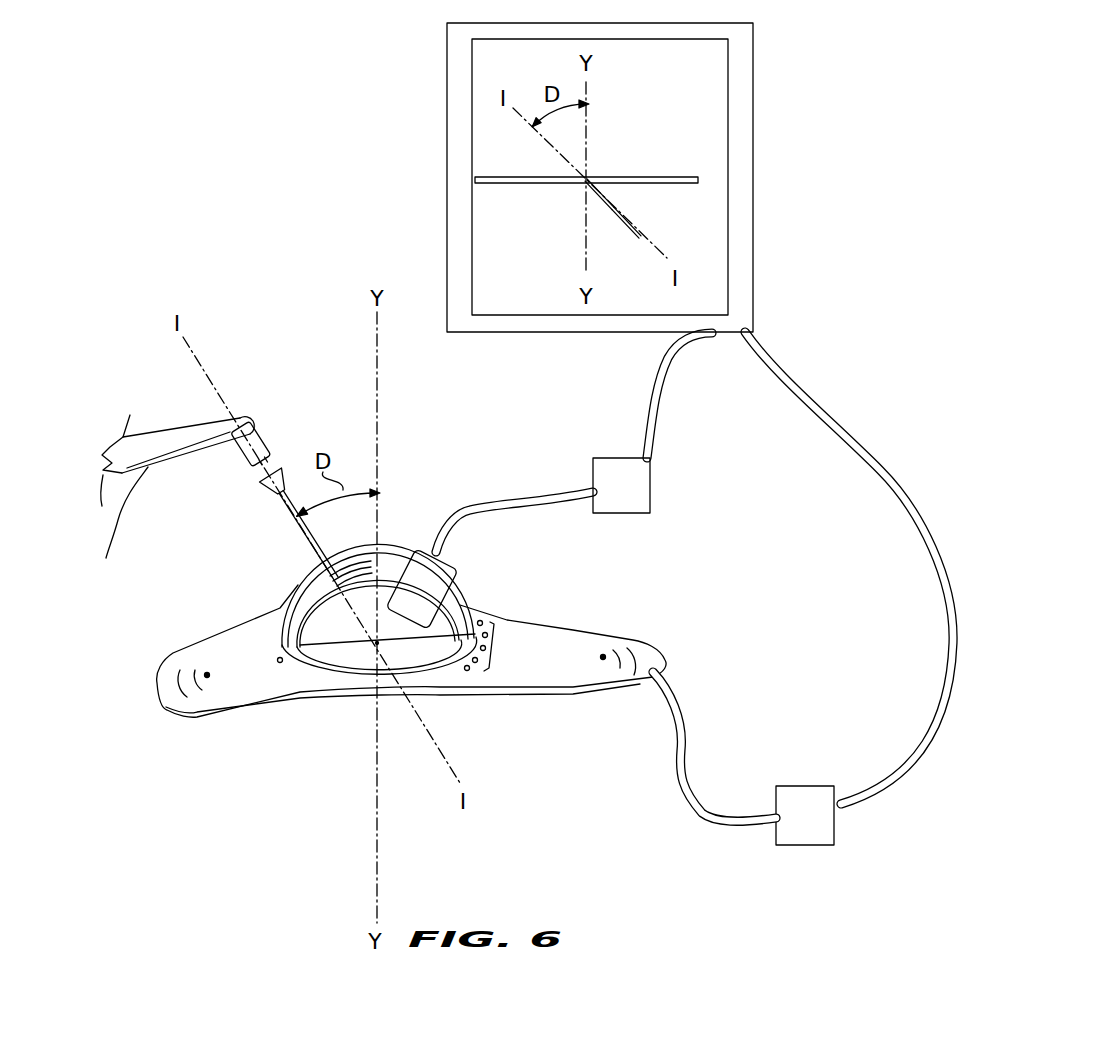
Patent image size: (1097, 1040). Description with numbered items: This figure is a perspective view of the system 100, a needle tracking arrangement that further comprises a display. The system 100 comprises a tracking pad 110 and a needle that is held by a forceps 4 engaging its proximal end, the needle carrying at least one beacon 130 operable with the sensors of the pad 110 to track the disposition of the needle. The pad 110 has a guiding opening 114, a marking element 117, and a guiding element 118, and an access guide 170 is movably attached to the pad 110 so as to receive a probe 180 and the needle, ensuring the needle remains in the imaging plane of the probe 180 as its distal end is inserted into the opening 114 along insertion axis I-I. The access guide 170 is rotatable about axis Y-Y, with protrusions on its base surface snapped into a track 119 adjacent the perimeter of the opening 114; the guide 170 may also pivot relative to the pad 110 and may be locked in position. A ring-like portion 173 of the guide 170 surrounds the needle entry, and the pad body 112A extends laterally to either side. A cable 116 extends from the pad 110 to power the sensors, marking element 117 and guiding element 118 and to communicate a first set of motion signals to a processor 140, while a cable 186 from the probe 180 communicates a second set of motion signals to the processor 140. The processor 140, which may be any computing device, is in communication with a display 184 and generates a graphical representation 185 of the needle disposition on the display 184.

The system 100 is at (293, 300).
The forceps 4 is at (176, 498).
The beacon 130 is at (276, 468).
The access guide 170 is at (330, 615).
The dome ring 173 is at (280, 608).
The guiding opening 114 is at (332, 655).
The track 119 is at (362, 673).
The mask body 112A is at (175, 672).
The marking element 117 is at (280, 662).
The guiding element 118 is at (493, 647).
The probe 180 is at (428, 545).
The cable 186 is at (530, 512).
The processor 140 is at (773, 588).
The cable 116 is at (677, 791).
The display 184 is at (753, 178).
The graphical representation 185 is at (728, 262).
The tracking pad 110 is at (670, 177).